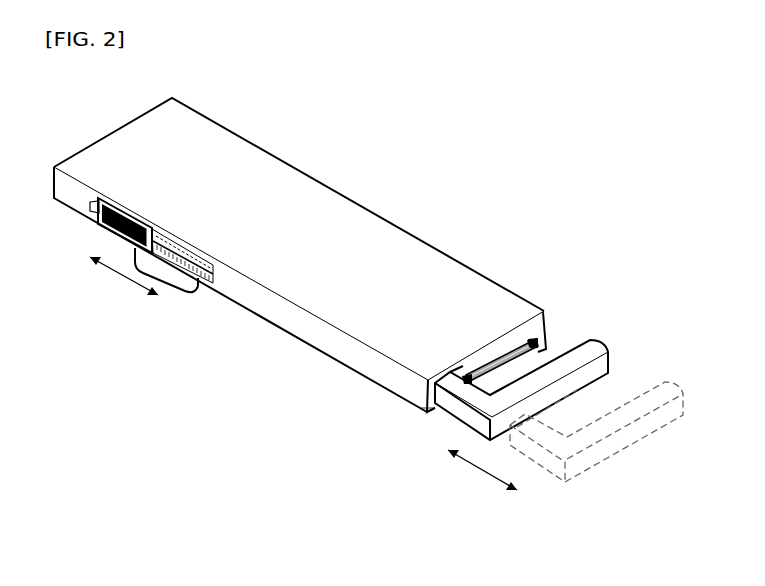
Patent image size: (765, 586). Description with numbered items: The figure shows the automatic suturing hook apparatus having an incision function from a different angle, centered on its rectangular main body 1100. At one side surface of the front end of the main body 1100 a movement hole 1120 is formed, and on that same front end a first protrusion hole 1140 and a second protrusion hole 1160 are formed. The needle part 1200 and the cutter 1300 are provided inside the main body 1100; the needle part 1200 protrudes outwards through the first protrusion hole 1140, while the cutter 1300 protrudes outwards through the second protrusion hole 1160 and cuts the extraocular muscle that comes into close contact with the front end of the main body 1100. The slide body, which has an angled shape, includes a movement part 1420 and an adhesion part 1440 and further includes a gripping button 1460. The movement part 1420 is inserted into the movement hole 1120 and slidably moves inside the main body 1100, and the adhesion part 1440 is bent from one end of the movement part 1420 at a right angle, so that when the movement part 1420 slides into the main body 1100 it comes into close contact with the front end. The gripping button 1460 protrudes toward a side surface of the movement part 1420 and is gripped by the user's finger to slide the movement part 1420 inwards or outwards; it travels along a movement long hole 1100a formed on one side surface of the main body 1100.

The main body 1100 is at (293, 180).
The movement long hole 1100a is at (210, 283).
The movement hole 1120 is at (413, 412).
The first protrusion hole 1140 is at (534, 342).
The second protrusion hole 1160 is at (535, 358).
The needle part 1200 is at (473, 377).
The cutter 1300 is at (593, 346).
The movement part 1420 is at (463, 413).
The adhesion part 1440 is at (542, 397).
The gripping button 1460 is at (98, 223).